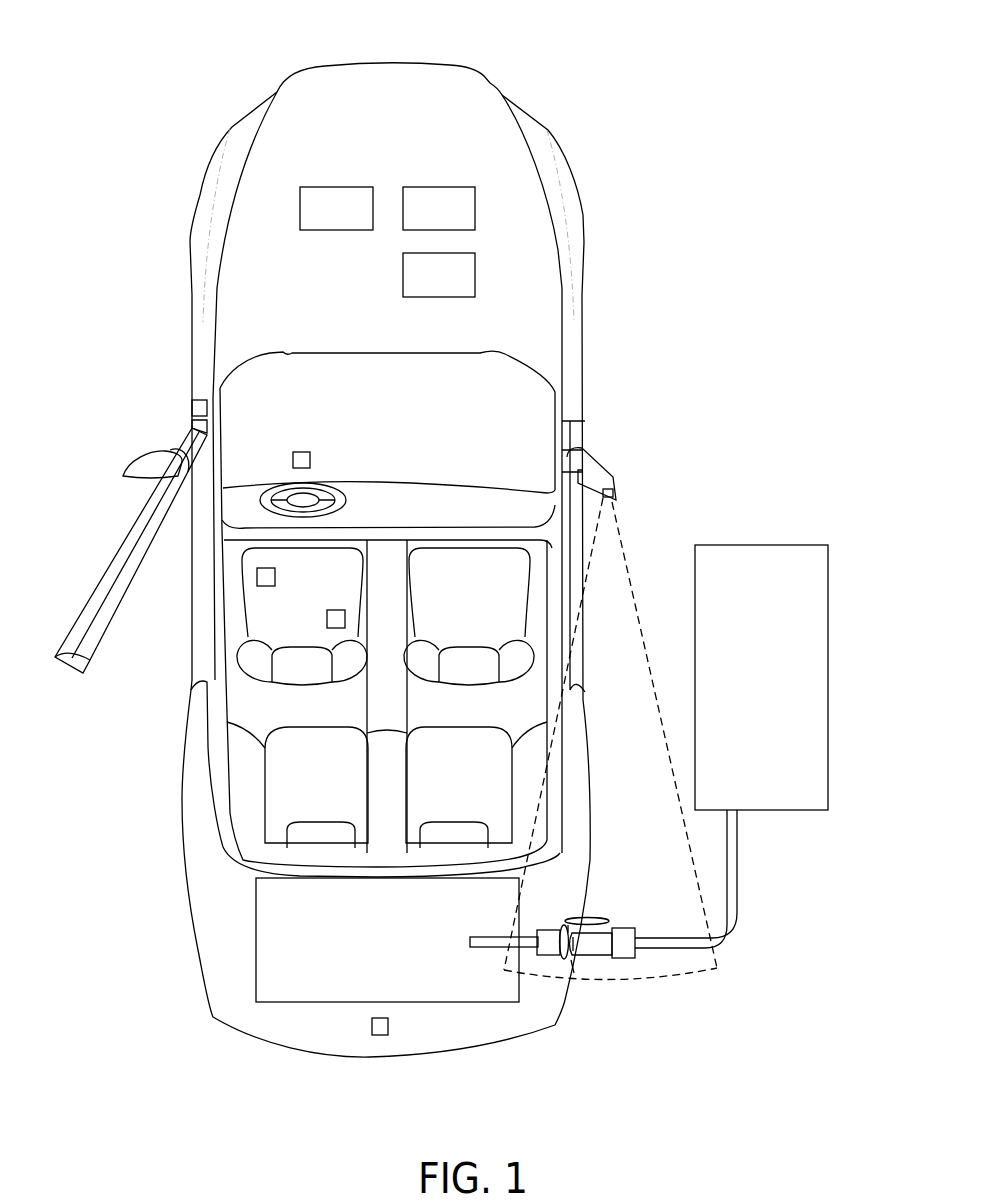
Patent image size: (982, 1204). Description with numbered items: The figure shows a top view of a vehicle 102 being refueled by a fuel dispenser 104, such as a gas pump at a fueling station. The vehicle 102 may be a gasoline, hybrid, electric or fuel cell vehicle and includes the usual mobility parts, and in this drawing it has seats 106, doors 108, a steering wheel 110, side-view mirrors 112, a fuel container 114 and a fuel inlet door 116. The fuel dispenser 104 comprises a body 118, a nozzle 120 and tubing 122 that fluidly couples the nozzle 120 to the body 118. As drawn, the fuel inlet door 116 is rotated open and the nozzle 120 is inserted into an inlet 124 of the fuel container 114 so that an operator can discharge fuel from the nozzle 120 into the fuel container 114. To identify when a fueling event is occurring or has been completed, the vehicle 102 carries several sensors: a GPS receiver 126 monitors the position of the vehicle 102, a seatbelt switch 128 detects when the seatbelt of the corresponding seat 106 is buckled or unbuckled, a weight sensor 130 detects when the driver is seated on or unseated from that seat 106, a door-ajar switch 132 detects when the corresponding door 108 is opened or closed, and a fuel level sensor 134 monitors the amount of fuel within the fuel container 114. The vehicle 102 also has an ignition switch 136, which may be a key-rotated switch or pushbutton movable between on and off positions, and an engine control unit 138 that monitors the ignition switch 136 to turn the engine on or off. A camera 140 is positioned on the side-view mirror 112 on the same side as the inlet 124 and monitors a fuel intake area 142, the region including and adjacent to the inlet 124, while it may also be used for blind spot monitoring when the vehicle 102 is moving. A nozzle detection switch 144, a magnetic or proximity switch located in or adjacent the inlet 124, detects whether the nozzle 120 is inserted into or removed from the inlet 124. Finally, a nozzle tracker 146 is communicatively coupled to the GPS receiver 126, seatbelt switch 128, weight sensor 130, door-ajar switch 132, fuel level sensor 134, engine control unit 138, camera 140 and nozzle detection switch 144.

The vehicle 102 is at (463, 50).
The fuel dispenser 104 is at (762, 527).
The seats 106 is at (303, 665).
The doors 108 is at (108, 553).
The steering wheel 110 is at (277, 487).
The side-view mirrors 112 is at (148, 452).
The fuel container 114 is at (447, 1003).
The fuel inlet door 116 is at (597, 916).
The body 118 is at (828, 678).
The nozzle 120 is at (582, 960).
The tubing 122 is at (745, 893).
The inlet 124 is at (574, 973).
The GPS receiver 126 is at (438, 187).
The seatbelt switch 128 is at (327, 618).
The weight sensor 130 is at (275, 577).
The door-ajar switch 132 is at (192, 398).
The fuel level sensor 134 is at (372, 1027).
The ignition switch 136 is at (301, 452).
The engine control unit 138 is at (403, 278).
The camera 140 is at (612, 475).
The fuel intake area 142 is at (553, 990).
The nozzle detection switch 144 is at (545, 930).
The nozzle tracker 146 is at (336, 187).